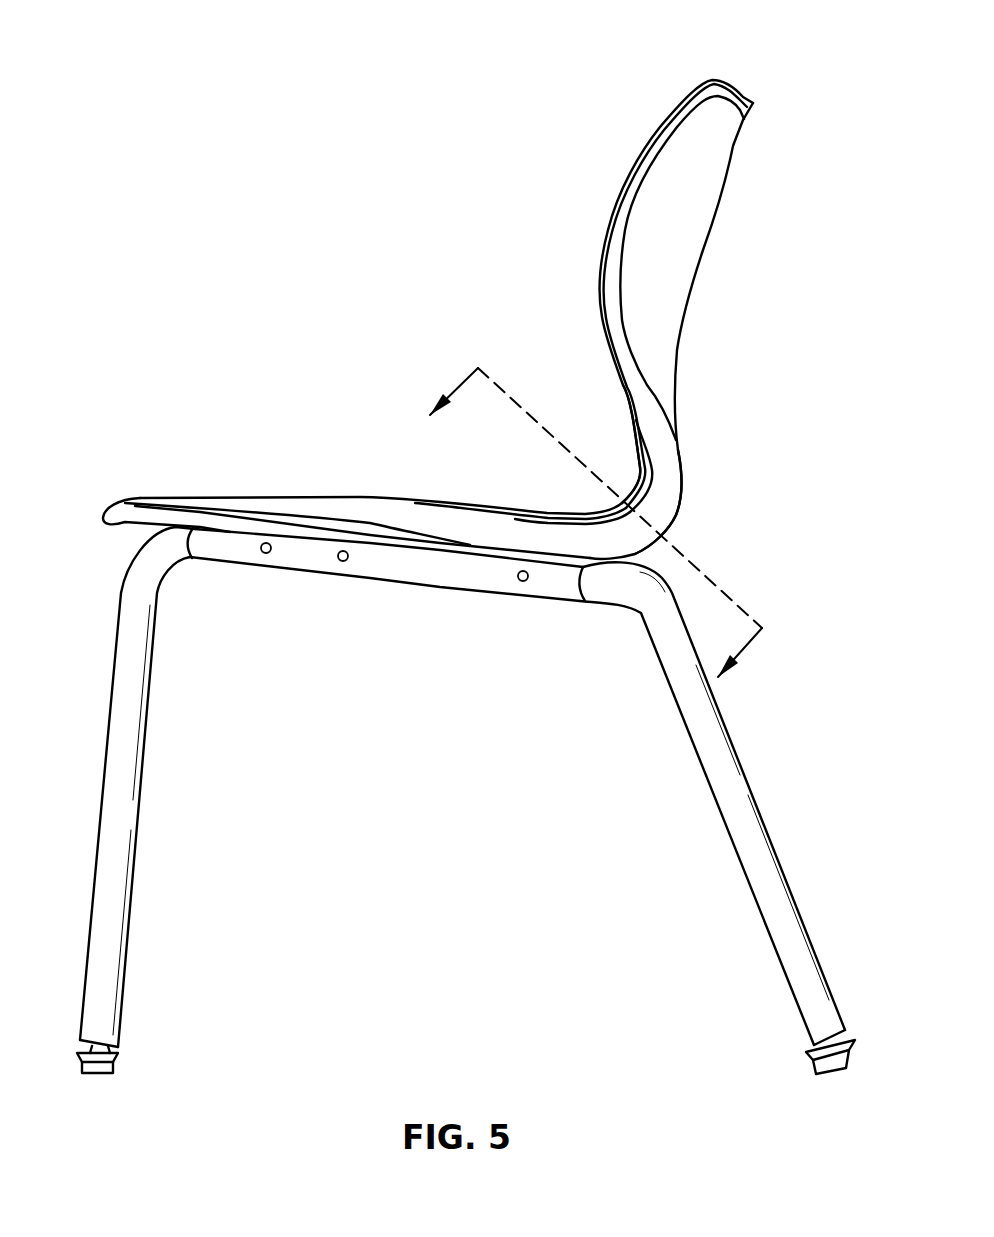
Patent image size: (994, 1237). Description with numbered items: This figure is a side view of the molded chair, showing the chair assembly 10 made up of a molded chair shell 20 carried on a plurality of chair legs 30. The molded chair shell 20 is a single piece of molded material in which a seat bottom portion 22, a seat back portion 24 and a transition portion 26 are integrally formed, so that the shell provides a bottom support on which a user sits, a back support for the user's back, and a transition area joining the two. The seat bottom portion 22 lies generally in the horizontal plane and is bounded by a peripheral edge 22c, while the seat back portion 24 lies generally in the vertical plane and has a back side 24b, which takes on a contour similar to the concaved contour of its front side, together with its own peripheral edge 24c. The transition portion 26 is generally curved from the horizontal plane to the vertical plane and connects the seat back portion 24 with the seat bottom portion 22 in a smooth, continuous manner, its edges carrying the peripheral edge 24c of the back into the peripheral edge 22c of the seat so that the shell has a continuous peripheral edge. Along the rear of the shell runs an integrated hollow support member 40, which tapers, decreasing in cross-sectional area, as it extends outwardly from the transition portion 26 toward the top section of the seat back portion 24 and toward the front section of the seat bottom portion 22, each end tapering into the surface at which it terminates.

The chair assembly 10 is at (200, 100).
The molded chair shell 20 is at (505, 325).
The seat bottom portion 22 is at (327, 497).
The peripheral edge 22c is at (215, 507).
The seat back portion 24 is at (608, 208).
The back side 24b is at (668, 228).
The peripheral edge 24c is at (647, 130).
The transition portion 26 is at (632, 470).
The chair legs 30 is at (782, 973).
The integrated hollow support member 40 is at (676, 519).